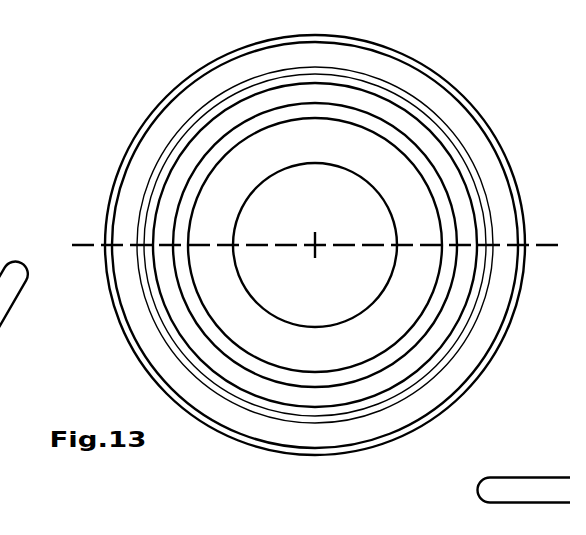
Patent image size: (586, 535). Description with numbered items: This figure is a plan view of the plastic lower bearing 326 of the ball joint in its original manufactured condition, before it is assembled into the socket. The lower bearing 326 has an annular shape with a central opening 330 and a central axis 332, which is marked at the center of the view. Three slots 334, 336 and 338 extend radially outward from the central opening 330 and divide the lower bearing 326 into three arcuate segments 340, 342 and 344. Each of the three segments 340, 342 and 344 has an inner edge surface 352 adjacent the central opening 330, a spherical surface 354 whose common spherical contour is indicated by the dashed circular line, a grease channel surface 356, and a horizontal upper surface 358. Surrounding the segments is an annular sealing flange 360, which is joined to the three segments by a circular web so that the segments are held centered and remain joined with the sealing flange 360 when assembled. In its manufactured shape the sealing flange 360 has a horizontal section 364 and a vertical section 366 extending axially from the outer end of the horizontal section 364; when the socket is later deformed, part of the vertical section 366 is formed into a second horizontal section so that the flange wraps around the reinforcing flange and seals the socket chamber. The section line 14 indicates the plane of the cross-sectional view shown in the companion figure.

The section line 14 is at (72, 245).
The lower bearing 326 is at (148, 69).
The central opening 330 is at (306, 190).
The central axis 332 is at (317, 250).
The slot 334 is at (366, 159).
The slot 336 is at (354, 318).
The slot 338 is at (244, 232).
The arcuate segment 340 is at (444, 121).
The arcuate segment 342 is at (162, 338).
The arcuate segment 344 is at (228, 93).
The inner edge surface 352 is at (258, 304).
The spherical surface 354 is at (408, 293).
The grease channel surface 356 is at (420, 330).
The horizontal upper surface 358 is at (418, 357).
The annular sealing flange 360 is at (404, 455).
The horizontal section 364 is at (128, 283).
The vertical section 366 is at (137, 140).